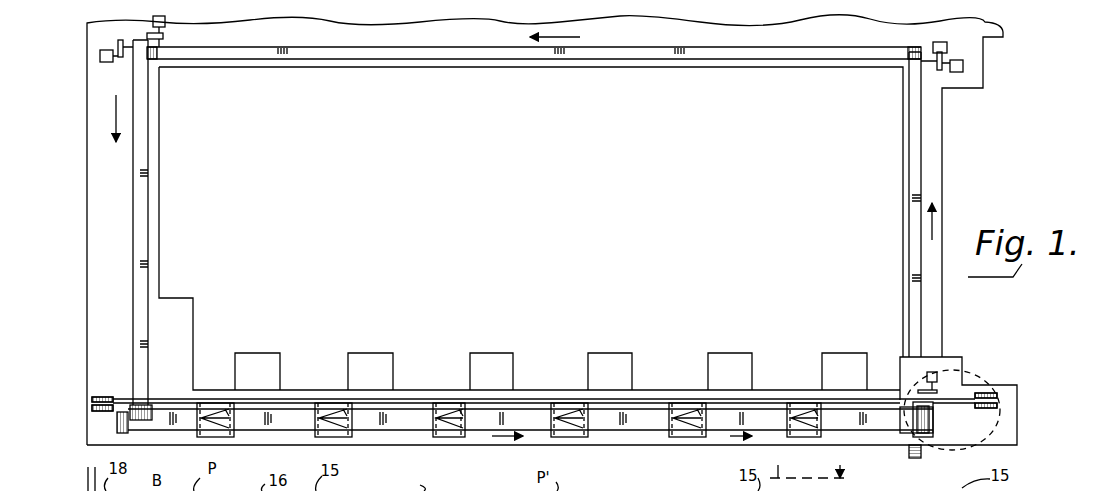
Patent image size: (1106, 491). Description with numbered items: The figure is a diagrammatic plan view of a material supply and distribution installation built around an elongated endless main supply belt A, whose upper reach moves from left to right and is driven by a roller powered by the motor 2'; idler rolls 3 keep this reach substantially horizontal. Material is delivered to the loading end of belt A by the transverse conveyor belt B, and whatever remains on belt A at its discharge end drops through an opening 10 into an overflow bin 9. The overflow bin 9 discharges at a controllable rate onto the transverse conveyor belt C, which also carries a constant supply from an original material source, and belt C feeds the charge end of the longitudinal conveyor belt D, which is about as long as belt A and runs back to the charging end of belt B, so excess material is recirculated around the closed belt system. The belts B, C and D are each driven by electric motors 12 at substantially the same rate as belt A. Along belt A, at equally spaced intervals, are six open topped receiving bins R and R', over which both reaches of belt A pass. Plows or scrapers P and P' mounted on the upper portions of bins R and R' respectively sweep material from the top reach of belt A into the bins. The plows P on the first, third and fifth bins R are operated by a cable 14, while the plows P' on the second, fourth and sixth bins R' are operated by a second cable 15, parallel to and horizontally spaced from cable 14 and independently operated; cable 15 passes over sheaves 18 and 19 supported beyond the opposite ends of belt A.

The motor 2' is at (951, 368).
The idler rolls 3 is at (810, 462).
The overflow bin 9 is at (1017, 443).
The opening 10 is at (937, 418).
The electric motors 12 is at (166, 22).
The cable 14 is at (122, 398).
The second cable 15 is at (540, 405).
The sheave 18 is at (98, 412).
The sheave 19 is at (996, 410).
The main supply belt A is at (177, 427).
The transverse conveyor belt B is at (133, 272).
The transverse conveyor belt C is at (918, 173).
The longitudinal conveyor belt D is at (611, 49).
The plow P is at (451, 423).
The plow P' is at (567, 382).
The receiving bin R is at (451, 435).
The receiving bin R' is at (568, 435).